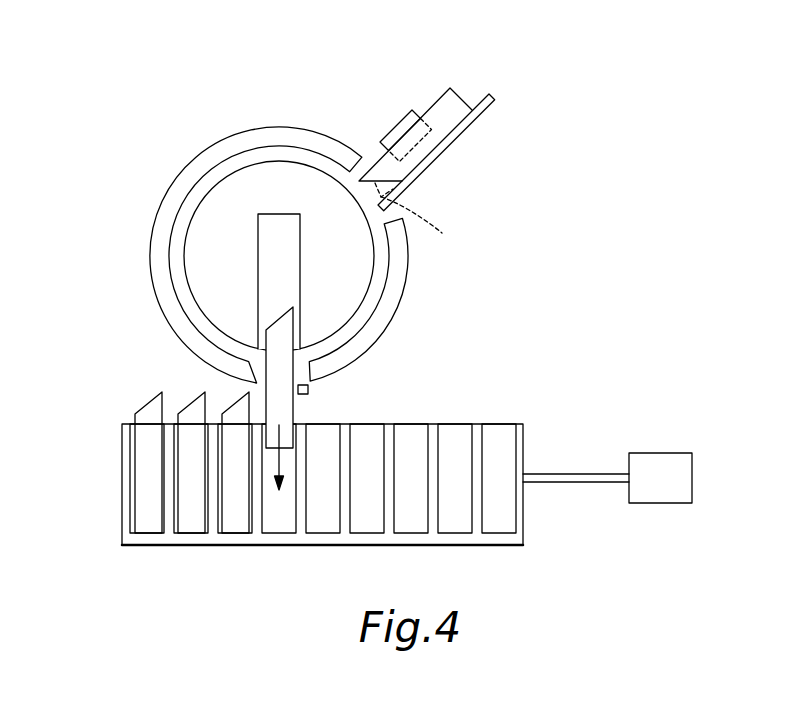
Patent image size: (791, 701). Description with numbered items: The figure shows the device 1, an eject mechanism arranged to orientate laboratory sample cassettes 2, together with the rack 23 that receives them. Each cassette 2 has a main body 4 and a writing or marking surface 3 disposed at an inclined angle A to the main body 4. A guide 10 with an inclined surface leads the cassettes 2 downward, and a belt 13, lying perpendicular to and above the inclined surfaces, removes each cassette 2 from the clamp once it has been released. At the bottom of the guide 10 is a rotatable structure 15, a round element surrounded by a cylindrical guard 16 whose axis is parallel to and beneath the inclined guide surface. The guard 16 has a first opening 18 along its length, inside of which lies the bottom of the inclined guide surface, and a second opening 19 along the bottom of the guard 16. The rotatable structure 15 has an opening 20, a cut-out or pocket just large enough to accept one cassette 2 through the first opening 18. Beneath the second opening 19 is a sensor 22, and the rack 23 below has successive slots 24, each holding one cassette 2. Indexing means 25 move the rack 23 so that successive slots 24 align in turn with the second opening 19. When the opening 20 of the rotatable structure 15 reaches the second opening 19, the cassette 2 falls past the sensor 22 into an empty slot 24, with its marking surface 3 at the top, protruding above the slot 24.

The device 1 is at (90, 187).
The cassette 2 is at (455, 75).
The marking surface 3 is at (137, 411).
The main body 4 is at (452, 124).
The guide 10 is at (508, 107).
The belt 13 is at (396, 120).
The rotatable structure 15 is at (195, 203).
The guard 16 is at (148, 262).
The first opening 18 is at (360, 180).
The second opening 19 is at (257, 372).
The opening 20 is at (300, 277).
The sensor 22 is at (308, 390).
The rack 23 is at (323, 488).
The slot 24 is at (498, 436).
The indexing means 25 is at (662, 453).
The inclined angle A is at (416, 215).